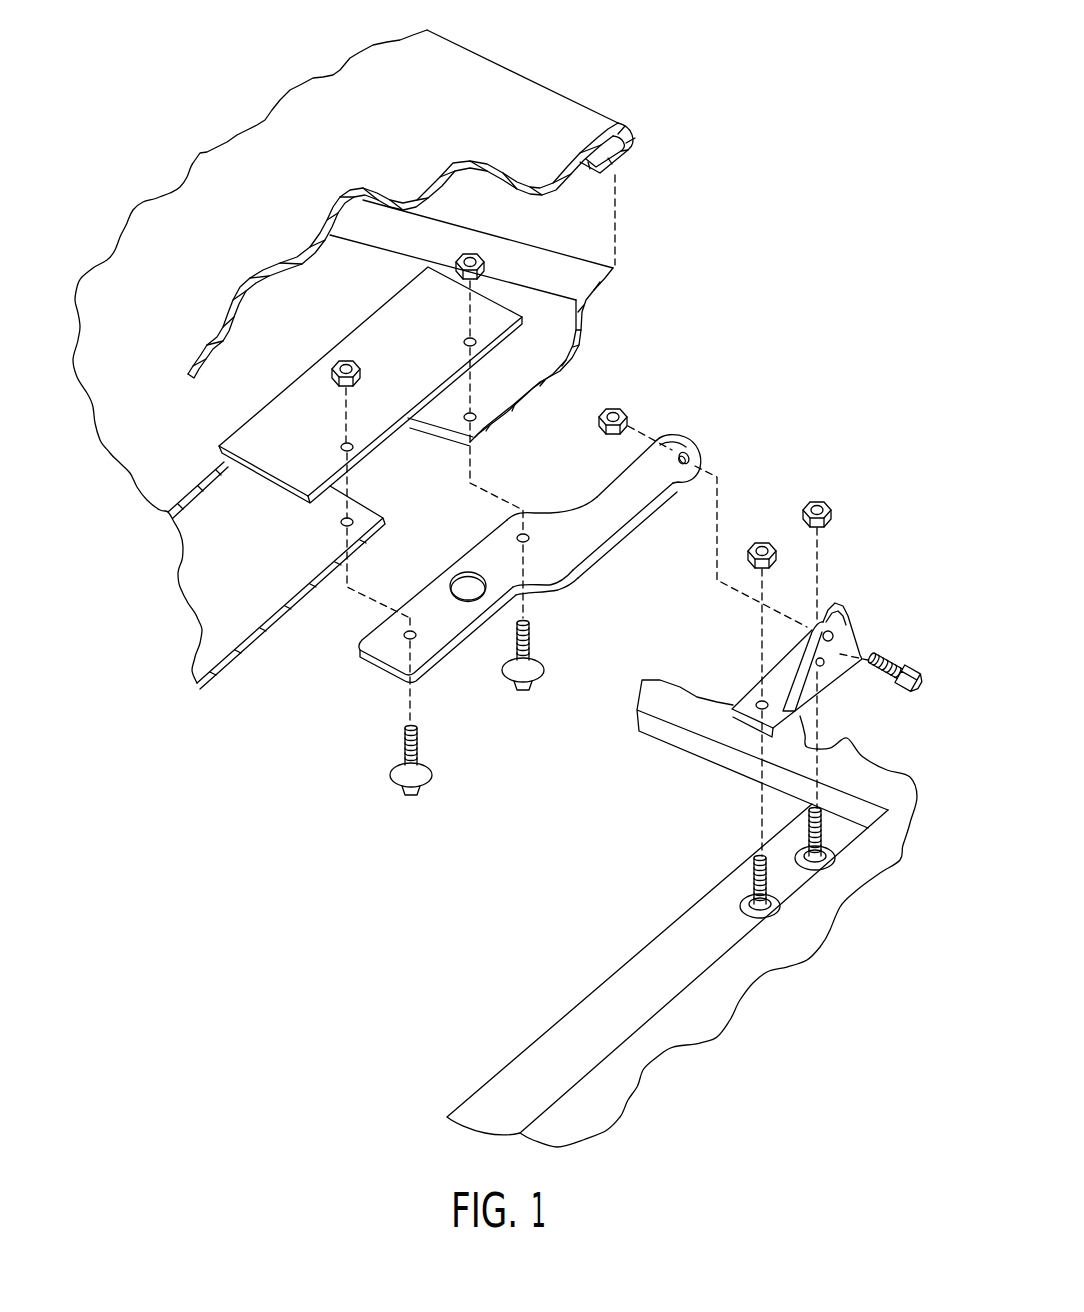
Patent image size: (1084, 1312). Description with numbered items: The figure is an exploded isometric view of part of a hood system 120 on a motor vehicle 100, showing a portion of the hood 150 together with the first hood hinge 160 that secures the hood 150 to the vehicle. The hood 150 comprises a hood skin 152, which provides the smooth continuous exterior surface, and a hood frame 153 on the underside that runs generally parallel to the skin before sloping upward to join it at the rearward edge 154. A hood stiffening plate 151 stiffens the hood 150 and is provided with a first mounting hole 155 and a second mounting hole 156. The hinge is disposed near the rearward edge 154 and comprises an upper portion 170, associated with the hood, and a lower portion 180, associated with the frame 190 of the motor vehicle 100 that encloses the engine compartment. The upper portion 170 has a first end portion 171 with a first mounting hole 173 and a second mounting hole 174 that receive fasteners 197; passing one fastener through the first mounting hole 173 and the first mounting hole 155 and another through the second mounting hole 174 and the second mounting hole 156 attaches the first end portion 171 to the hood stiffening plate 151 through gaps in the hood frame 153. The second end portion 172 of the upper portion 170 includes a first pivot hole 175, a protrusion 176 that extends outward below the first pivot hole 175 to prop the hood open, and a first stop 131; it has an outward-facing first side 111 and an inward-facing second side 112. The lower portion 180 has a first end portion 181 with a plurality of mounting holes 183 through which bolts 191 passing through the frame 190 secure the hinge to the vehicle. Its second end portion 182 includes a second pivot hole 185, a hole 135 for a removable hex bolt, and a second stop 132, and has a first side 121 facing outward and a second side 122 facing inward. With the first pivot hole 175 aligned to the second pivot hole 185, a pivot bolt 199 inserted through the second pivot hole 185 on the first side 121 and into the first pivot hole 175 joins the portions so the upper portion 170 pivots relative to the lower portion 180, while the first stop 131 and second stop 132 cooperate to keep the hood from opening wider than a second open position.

The motor vehicle 100 is at (682, 913).
The frame 190 is at (667, 969).
The bolts 191 is at (745, 882).
The hood 150 is at (388, 348).
The hood skin 152 is at (393, 132).
The hood frame 153 is at (270, 567).
The rearward edge 154 is at (645, 124).
The hood stiffening plate 151 is at (370, 436).
The first mounting hole 155 is at (462, 341).
The second mounting hole 156 is at (340, 443).
The hood system 120 is at (621, 530).
The first hood hinge 160 is at (565, 549).
The upper portion 170 is at (558, 566).
The first end portion 171 is at (578, 575).
The second end portion 172 is at (674, 497).
The first mounting hole 173 is at (518, 537).
The second mounting hole 174 is at (405, 639).
The first pivot hole 175 is at (699, 447).
The protrusion 176 is at (699, 480).
The first side 111 is at (518, 575).
The second side 112 is at (592, 482).
The first stop 131 is at (665, 444).
The second stop 132 is at (837, 604).
The lower portion 180 is at (789, 679).
The first end portion 181 is at (746, 686).
The second end portion 182 is at (803, 655).
The plurality of mounting holes 183 is at (757, 710).
The second pivot hole 185 is at (823, 634).
The first side 121 is at (853, 652).
The second side 122 is at (796, 640).
The hole 135 is at (823, 667).
The fasteners 197 is at (373, 757).
The pivot bolt 199 is at (909, 688).